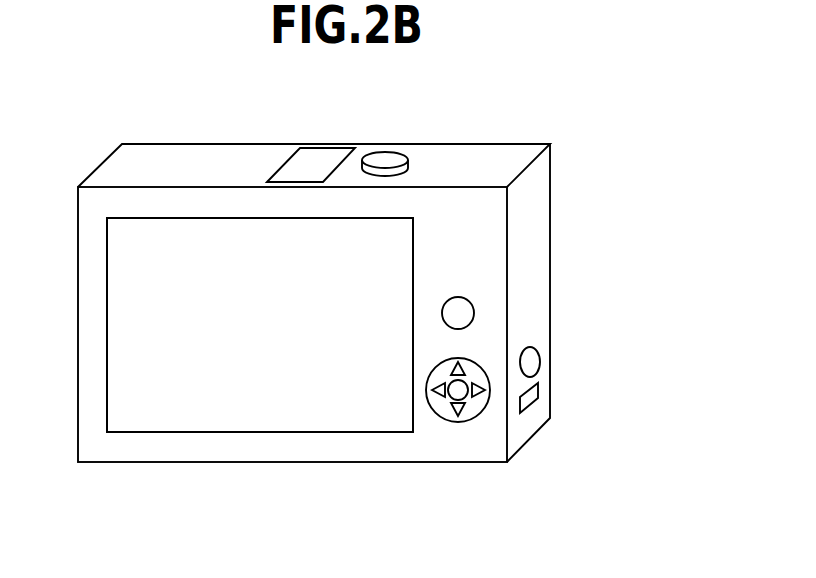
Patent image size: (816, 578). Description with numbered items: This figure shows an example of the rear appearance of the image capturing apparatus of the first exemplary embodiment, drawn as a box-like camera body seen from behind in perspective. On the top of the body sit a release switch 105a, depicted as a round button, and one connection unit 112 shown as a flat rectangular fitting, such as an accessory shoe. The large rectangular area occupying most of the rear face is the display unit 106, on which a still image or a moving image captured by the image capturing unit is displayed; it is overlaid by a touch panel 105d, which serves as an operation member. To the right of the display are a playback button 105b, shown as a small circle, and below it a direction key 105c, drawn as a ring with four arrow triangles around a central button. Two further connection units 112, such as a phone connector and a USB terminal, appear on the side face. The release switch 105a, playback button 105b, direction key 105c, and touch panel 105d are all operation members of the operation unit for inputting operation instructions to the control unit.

The release switch 105a is at (386, 157).
The playback button 105b is at (466, 299).
The direction key 105c is at (455, 422).
The touch panel 105d is at (120, 238).
The display unit 106 is at (202, 217).
The connection unit 112 is at (319, 158).